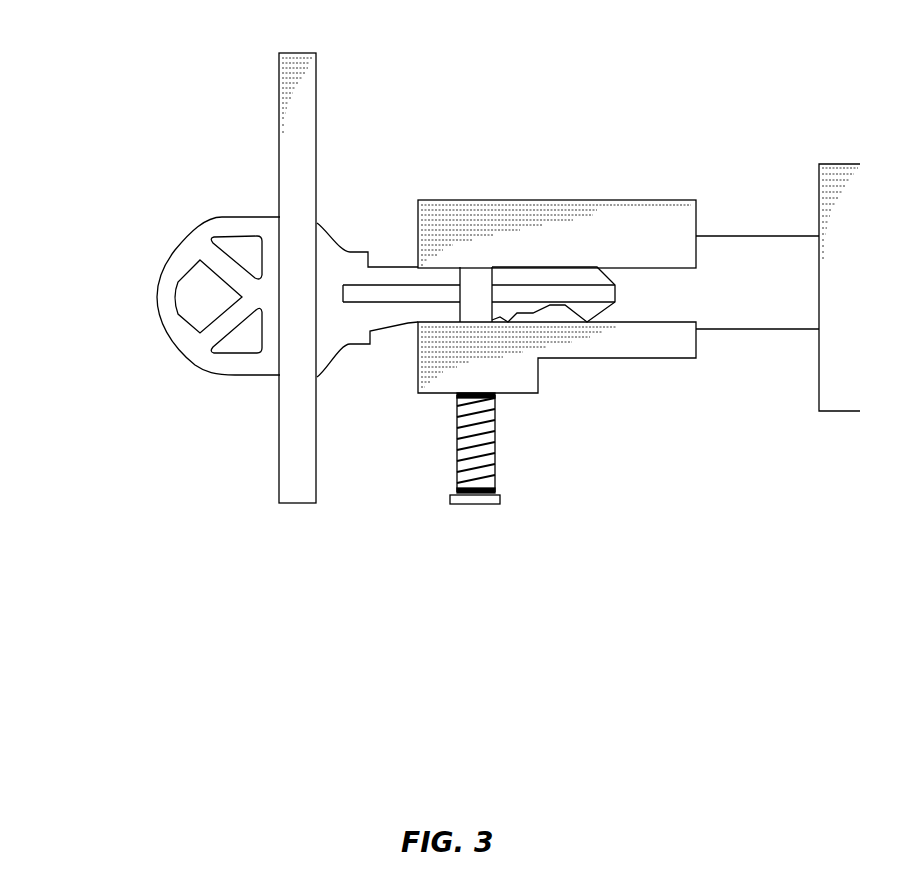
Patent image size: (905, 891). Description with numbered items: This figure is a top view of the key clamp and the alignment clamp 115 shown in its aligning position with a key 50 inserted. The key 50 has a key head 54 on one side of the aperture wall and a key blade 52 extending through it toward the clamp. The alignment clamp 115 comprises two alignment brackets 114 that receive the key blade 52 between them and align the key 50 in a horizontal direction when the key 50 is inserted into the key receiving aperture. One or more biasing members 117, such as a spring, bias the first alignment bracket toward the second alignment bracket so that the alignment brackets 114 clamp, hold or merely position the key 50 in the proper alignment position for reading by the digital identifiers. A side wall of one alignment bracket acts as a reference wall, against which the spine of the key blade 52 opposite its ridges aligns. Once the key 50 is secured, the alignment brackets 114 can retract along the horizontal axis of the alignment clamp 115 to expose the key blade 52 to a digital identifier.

The key 50 is at (325, 198).
The key blade 52 is at (397, 273).
The key head 54 is at (165, 279).
The alignment brackets 114 is at (533, 200).
The alignment clamp 115 is at (640, 145).
The biasing members 117 is at (450, 442).